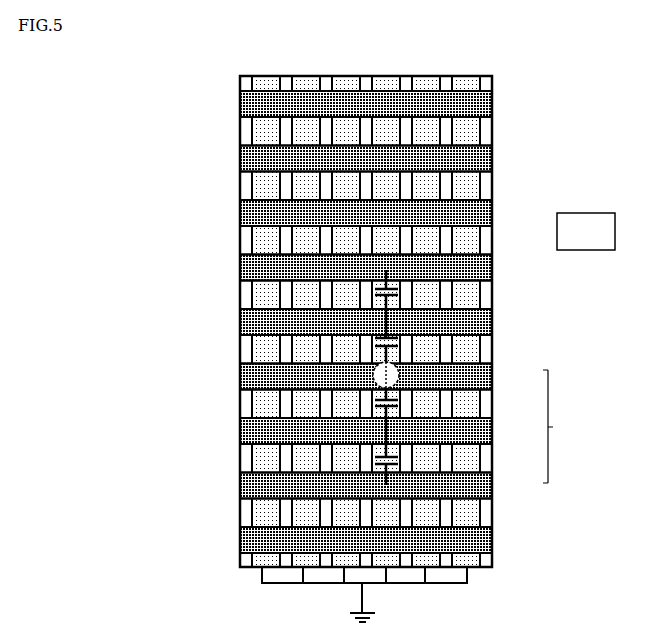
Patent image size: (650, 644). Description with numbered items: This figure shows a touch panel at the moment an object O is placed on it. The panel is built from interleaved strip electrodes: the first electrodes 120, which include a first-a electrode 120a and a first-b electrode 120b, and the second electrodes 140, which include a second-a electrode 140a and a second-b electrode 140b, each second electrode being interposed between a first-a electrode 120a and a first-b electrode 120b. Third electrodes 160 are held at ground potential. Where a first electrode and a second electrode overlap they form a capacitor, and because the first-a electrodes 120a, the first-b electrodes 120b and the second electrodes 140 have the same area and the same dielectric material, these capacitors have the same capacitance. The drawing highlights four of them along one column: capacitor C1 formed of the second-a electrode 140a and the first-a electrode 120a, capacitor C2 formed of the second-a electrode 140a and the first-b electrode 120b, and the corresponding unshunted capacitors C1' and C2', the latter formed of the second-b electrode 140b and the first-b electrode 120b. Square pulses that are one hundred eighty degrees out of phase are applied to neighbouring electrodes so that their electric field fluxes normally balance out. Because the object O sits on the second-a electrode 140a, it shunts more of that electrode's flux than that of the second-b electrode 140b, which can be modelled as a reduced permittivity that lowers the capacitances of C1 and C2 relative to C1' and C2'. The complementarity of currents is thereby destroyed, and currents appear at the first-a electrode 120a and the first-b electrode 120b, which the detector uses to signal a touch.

The first electrodes 120 is at (240, 540).
The 1a electrode 120a is at (378, 297).
The 1b electrode 120b is at (240, 433).
The second electrodes 140 is at (561, 426).
The 2a electrode 140a is at (492, 376).
The 2b electrode 140b is at (492, 484).
The third electrodes 160 is at (470, 238).
The capacitor C1 is at (296, 351).
The capacitor C1' is at (298, 314).
The capacitor C2 is at (300, 429).
The capacitor C2' is at (299, 477).
The object O is at (396, 364).